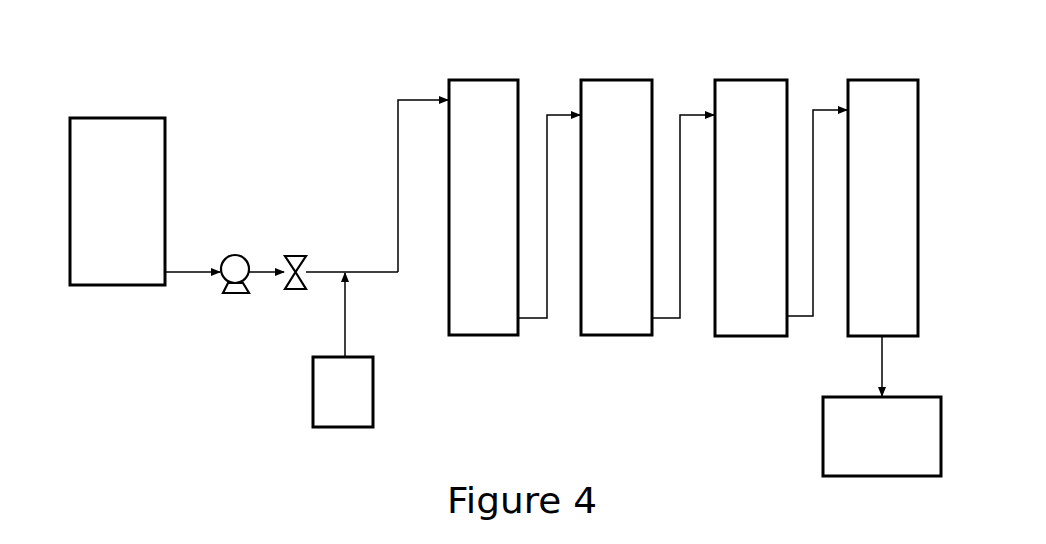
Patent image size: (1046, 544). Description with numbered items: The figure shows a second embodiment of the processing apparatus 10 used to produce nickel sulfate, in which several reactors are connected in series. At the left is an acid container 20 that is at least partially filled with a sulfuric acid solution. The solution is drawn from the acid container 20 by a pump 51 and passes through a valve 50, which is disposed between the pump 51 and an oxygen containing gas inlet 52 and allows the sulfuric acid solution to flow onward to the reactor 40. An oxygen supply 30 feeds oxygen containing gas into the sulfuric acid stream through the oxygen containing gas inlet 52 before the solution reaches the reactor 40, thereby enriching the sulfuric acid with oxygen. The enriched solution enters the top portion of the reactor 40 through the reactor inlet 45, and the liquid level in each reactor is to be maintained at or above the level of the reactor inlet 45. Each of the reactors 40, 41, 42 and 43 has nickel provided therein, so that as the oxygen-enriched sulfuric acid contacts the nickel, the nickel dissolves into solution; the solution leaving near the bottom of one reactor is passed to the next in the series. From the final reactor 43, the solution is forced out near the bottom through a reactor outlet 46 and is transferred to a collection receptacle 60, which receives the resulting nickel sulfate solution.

The processing apparatus 10 is at (198, 358).
The acid container 20 is at (117, 201).
The oxygen supply 30 is at (343, 392).
The reactor 40 is at (483, 207).
The reactor 41 is at (616, 207).
The reactor 42 is at (751, 208).
The reactor 43 is at (883, 208).
The reactor inlet 45 is at (423, 173).
The reactor outlet 46 is at (866, 366).
The valve 50 is at (295, 256).
The pump 51 is at (236, 258).
The oxygen containing gas inlet 52 is at (342, 300).
The collection receptacle 60 is at (882, 436).